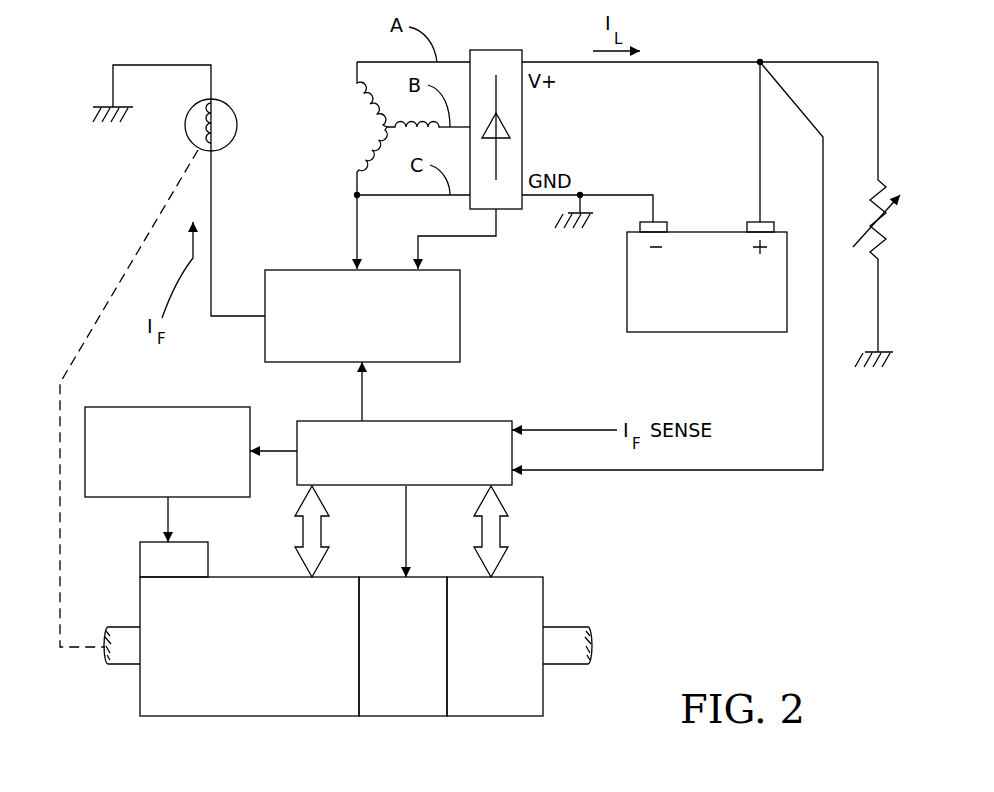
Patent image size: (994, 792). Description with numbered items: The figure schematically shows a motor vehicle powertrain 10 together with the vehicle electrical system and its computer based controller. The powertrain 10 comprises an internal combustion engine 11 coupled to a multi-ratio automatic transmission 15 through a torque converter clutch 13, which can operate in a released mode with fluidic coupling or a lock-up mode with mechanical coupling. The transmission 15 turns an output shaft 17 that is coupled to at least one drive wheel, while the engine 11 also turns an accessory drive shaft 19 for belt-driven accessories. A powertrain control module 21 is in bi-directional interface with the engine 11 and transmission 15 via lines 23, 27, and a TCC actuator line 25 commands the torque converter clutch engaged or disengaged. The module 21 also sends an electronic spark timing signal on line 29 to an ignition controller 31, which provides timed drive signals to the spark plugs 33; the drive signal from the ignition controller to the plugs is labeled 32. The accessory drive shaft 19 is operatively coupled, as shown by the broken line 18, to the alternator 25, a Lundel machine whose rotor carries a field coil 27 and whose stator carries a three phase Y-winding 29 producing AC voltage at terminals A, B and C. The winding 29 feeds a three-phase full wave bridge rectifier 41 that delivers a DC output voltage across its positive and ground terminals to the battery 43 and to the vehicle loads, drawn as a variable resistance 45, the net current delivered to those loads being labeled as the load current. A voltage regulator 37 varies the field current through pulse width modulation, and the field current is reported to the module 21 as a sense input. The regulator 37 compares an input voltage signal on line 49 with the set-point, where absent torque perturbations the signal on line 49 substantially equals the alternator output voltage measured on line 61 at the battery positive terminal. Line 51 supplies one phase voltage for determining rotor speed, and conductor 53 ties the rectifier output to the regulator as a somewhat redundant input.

The powertrain 10 is at (207, 722).
The internal combustion engine 11 is at (312, 717).
The torque converter clutch 13 is at (400, 717).
The multi-ratio automatic transmission 15 is at (498, 717).
The output shaft 17 is at (576, 635).
The broken line 18 is at (127, 270).
The accessory drive shaft 19 is at (117, 665).
The powertrain control module 21 is at (477, 421).
The line 23 is at (322, 522).
The alternator 25 is at (281, 80).
The field coil 27 is at (218, 152).
The three phase Y-winding 29 is at (385, 127).
The ignition controller 31 is at (168, 407).
The ignition control signal 32 is at (165, 515).
The spark plugs 33 is at (185, 545).
The voltage regulator 37 is at (455, 307).
The three-phase full wave bridge rectifier 41 is at (500, 50).
The battery 43 is at (677, 333).
The variable resistance 45 is at (875, 200).
The line 49 is at (365, 401).
The line 51 is at (357, 228).
The conductor 53 is at (432, 236).
The line 61 is at (745, 470).